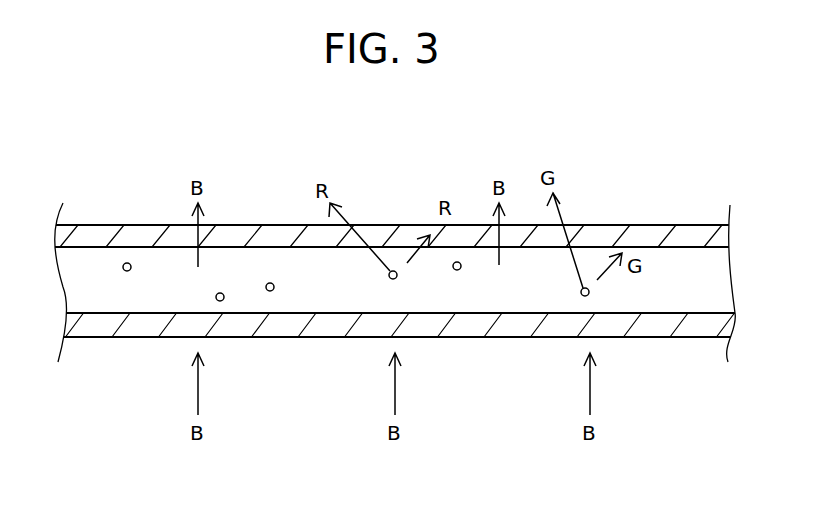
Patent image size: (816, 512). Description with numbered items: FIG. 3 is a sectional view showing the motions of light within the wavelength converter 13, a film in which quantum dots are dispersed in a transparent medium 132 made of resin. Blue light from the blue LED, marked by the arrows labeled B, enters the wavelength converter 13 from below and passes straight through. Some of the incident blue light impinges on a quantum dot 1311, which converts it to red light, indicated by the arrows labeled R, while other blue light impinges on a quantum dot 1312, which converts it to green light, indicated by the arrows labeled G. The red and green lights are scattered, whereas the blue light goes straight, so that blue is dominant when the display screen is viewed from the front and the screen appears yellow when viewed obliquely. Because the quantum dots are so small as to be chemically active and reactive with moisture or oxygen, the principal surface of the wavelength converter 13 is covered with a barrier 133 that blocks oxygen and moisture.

The wavelength converter 13 is at (130, 177).
The barrier 133 is at (252, 228).
The transparent medium 132 is at (673, 267).
The quantum dot 1311 is at (398, 278).
The quantum dot 1312 is at (589, 294).